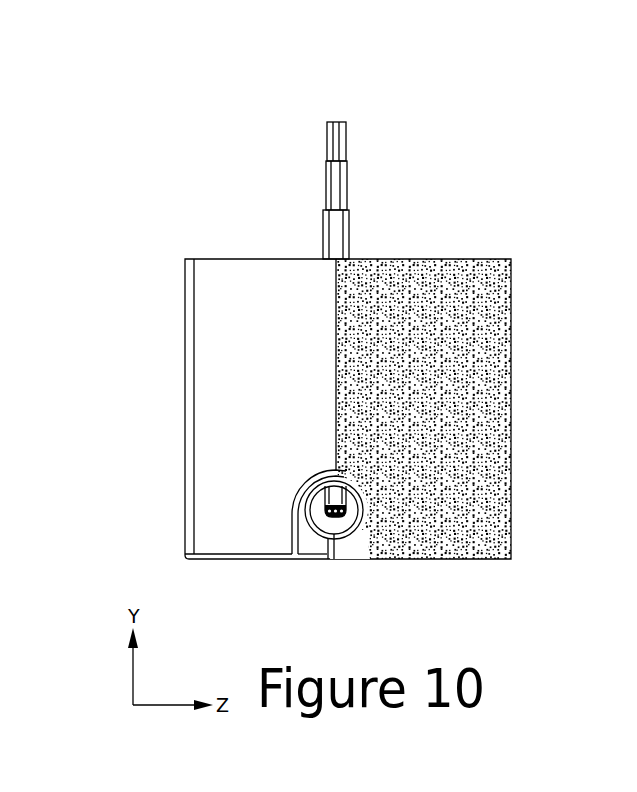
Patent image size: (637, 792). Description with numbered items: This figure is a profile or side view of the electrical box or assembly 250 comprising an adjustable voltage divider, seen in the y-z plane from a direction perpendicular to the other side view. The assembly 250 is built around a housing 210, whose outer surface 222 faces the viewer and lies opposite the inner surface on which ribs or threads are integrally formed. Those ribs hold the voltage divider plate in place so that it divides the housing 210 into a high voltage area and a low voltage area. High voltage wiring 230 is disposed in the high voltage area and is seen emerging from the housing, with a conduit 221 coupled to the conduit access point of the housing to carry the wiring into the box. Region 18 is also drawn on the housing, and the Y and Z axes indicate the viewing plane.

The electrical box or assembly comprising an adjustable voltage divider 250 is at (152, 130).
The housing 210 is at (134, 299).
The outer surface 222 is at (278, 368).
The battery cell 18 is at (443, 367).
The conduit 221 is at (332, 559).
The high voltage wiring 230 is at (342, 140).